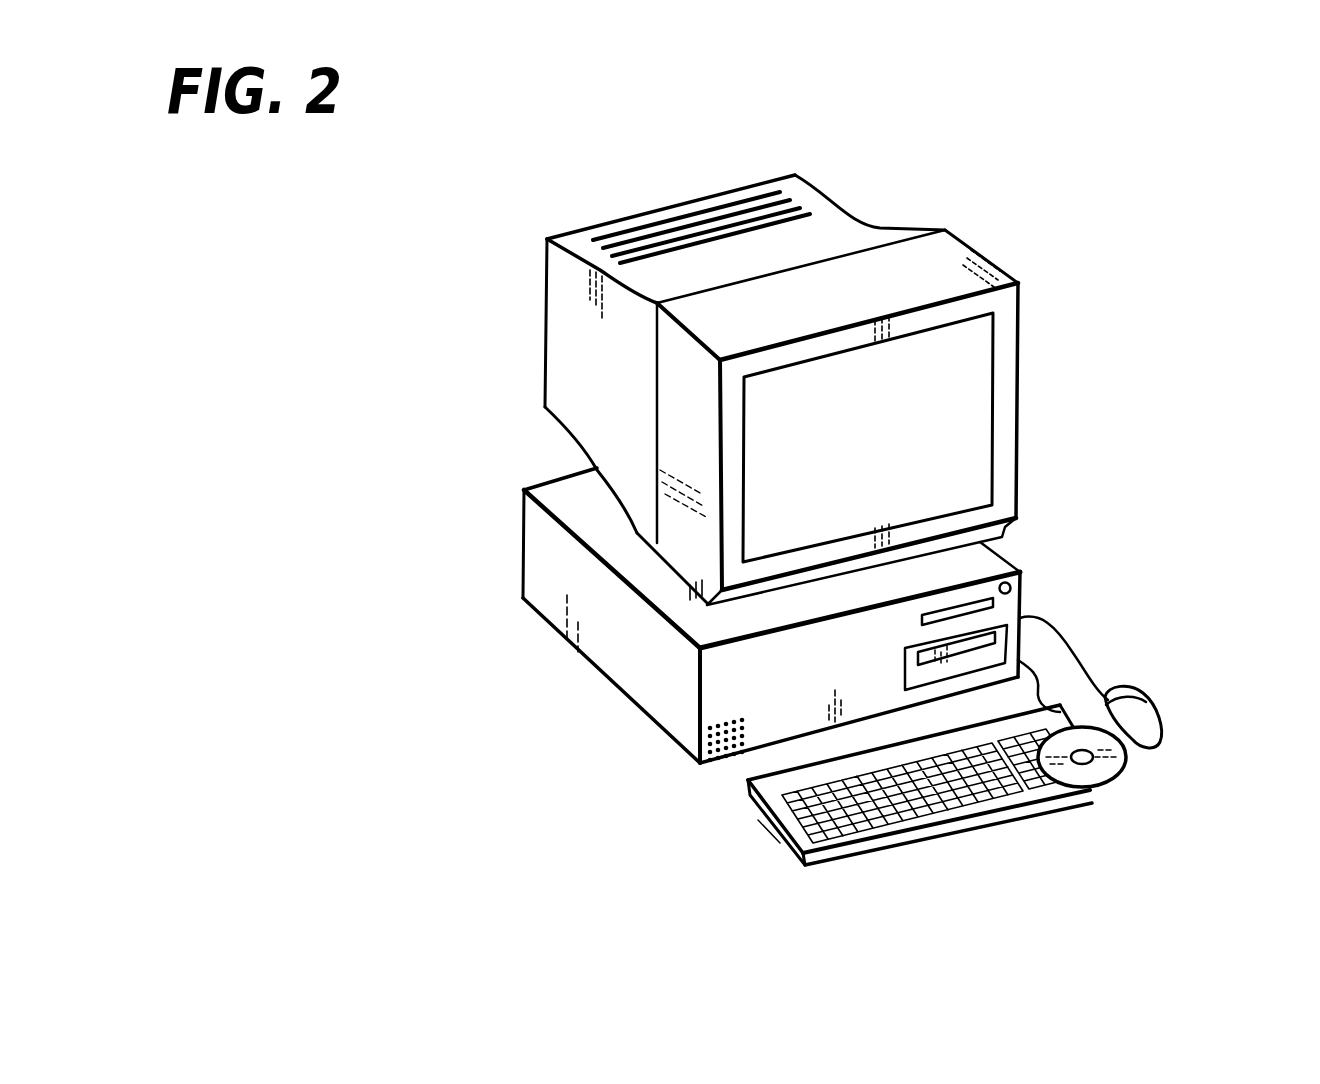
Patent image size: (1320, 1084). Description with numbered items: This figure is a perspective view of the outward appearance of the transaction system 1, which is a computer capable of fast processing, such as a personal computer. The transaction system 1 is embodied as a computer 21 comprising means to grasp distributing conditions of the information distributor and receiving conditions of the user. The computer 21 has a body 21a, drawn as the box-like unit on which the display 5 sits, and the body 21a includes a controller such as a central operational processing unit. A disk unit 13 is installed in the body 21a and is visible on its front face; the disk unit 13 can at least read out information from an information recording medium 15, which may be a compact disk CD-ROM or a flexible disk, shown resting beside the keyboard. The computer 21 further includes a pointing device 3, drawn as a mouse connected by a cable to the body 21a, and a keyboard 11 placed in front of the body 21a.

The transaction system 1 is at (616, 198).
The display 5 is at (989, 259).
The computer 21 is at (500, 542).
The body 21a is at (580, 652).
The disk unit 13 is at (993, 618).
The keyboard 11 is at (763, 827).
The information recording medium 15 is at (1127, 768).
The pointing device 3 is at (1168, 700).